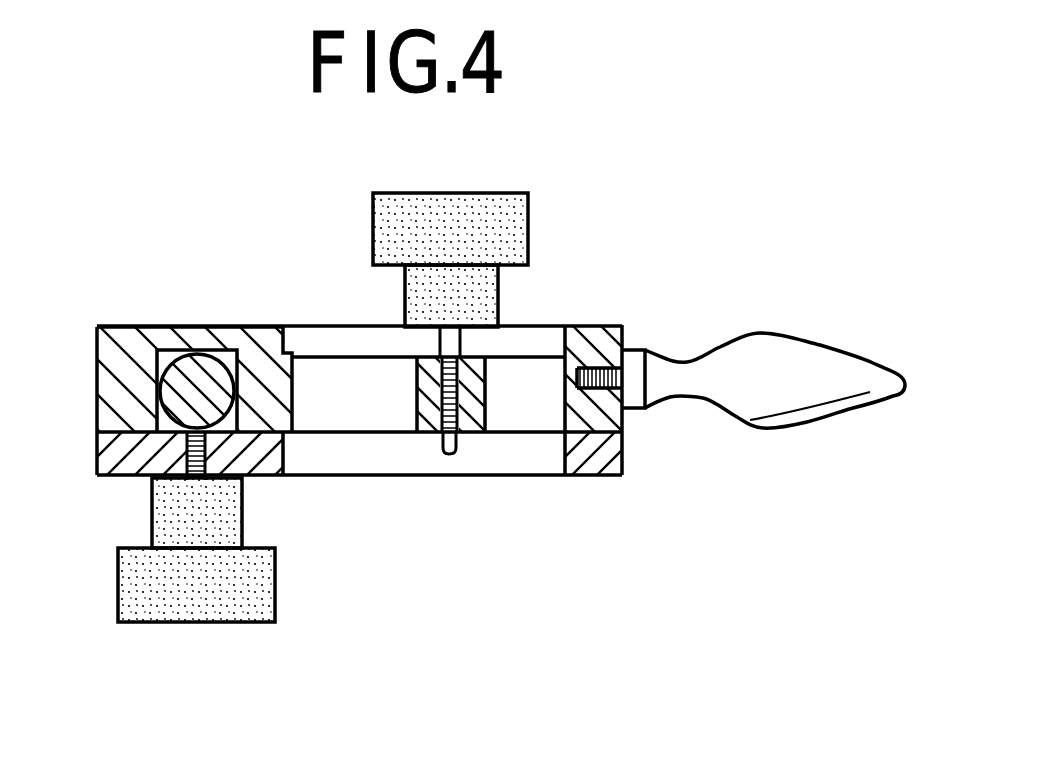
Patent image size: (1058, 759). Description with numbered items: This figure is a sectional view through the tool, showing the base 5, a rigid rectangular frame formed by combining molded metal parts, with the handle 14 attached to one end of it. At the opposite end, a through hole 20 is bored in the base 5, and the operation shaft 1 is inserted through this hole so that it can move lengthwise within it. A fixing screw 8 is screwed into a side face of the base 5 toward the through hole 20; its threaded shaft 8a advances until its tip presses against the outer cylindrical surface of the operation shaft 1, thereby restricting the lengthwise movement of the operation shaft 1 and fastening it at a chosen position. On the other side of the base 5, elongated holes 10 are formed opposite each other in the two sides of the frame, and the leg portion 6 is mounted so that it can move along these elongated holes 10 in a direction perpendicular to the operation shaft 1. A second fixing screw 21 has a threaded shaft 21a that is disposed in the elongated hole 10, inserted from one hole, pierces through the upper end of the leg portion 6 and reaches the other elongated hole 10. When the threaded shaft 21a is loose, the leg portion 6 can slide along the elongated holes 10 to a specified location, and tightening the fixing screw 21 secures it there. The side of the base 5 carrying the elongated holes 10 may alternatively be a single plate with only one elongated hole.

The operation shaft 1 is at (194, 355).
The base 5 is at (623, 462).
The leg portion 6 is at (422, 425).
The fixing screw 8 is at (188, 593).
The threaded shaft 8a is at (182, 467).
The elongated holes 10 is at (330, 340).
The handle 14 is at (763, 350).
The through hole 20 is at (160, 348).
The fixing screw 21 is at (448, 212).
The threaded shaft 21a is at (490, 355).